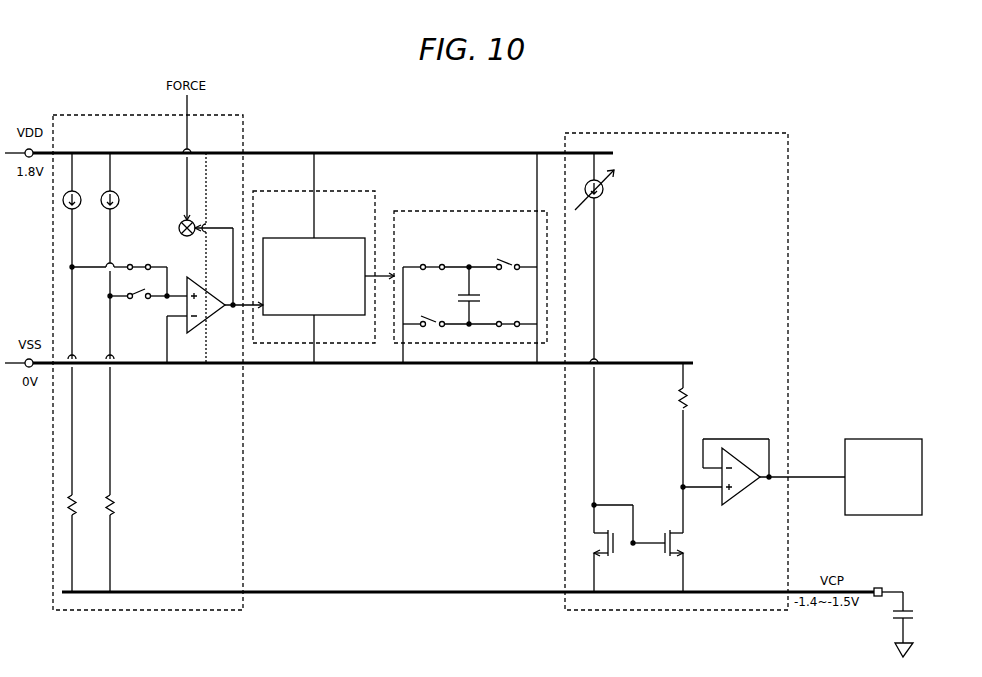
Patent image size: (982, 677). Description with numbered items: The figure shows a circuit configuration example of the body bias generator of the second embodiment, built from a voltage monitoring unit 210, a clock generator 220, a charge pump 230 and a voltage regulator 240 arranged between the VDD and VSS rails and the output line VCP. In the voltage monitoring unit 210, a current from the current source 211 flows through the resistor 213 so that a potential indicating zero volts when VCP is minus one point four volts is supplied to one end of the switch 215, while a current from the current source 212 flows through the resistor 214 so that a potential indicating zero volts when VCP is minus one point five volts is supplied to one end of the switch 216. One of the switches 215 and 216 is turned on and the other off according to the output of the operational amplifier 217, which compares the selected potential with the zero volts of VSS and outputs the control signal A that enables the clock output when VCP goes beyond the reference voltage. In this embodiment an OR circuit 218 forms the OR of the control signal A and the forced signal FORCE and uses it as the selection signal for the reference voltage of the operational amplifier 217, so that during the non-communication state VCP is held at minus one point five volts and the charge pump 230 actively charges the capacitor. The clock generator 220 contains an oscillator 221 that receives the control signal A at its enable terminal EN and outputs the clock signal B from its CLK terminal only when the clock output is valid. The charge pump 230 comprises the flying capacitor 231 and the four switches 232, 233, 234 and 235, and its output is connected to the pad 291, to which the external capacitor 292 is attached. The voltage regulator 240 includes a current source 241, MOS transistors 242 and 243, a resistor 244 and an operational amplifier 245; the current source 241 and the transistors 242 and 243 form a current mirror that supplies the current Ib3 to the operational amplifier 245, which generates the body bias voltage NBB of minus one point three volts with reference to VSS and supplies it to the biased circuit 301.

The voltage monitoring unit 210 is at (106, 114).
The current source 211 is at (81, 196).
The current source 212 is at (118, 196).
The resistor 213 is at (92, 515).
The resistor 214 is at (130, 515).
The switch 215 is at (148, 257).
The switch 216 is at (144, 305).
The operational amplifier 217 is at (215, 318).
The OR circuit 218 is at (179, 222).
The clock generator 220 is at (284, 190).
The oscillator 221 is at (340, 238).
The charge pump 230 is at (478, 210).
The flying capacitor 231 is at (482, 297).
The switch 232 is at (425, 261).
The switch 233 is at (437, 312).
The switch 234 is at (512, 256).
The switch 235 is at (513, 316).
The voltage regulator 240 is at (740, 132).
The current source 241 is at (608, 188).
The MOS transistor 242 is at (612, 563).
The MOS transistor 243 is at (694, 546).
The resistor 244 is at (695, 397).
The operational amplifier 245 is at (738, 498).
The pad 291 is at (883, 584).
The external capacitor 292 is at (886, 627).
The biased circuit 301 is at (883, 439).